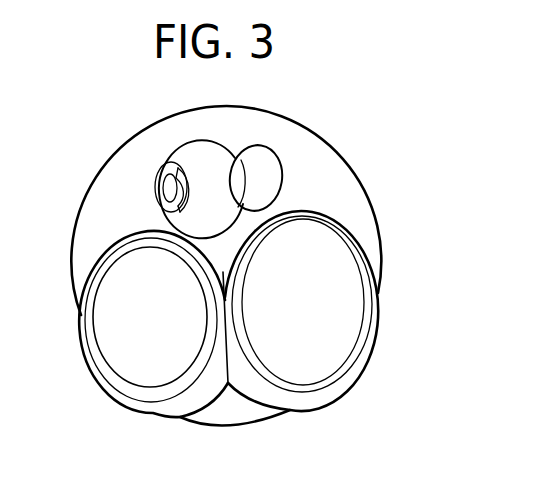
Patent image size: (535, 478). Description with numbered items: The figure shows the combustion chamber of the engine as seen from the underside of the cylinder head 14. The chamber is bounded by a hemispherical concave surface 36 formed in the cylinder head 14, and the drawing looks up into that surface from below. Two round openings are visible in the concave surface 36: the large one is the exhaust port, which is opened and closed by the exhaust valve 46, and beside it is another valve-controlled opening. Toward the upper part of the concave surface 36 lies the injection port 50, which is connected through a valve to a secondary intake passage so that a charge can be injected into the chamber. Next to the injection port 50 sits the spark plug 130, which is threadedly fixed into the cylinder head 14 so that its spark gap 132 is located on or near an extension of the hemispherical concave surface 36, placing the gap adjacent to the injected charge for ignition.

The cylinder head 14 is at (347, 312).
The hemispherical concave surface 36 is at (347, 188).
The exhaust valve 46 is at (115, 345).
The injection port 50 is at (238, 171).
The spark plug 130 is at (156, 182).
The spark gap 132 is at (177, 170).